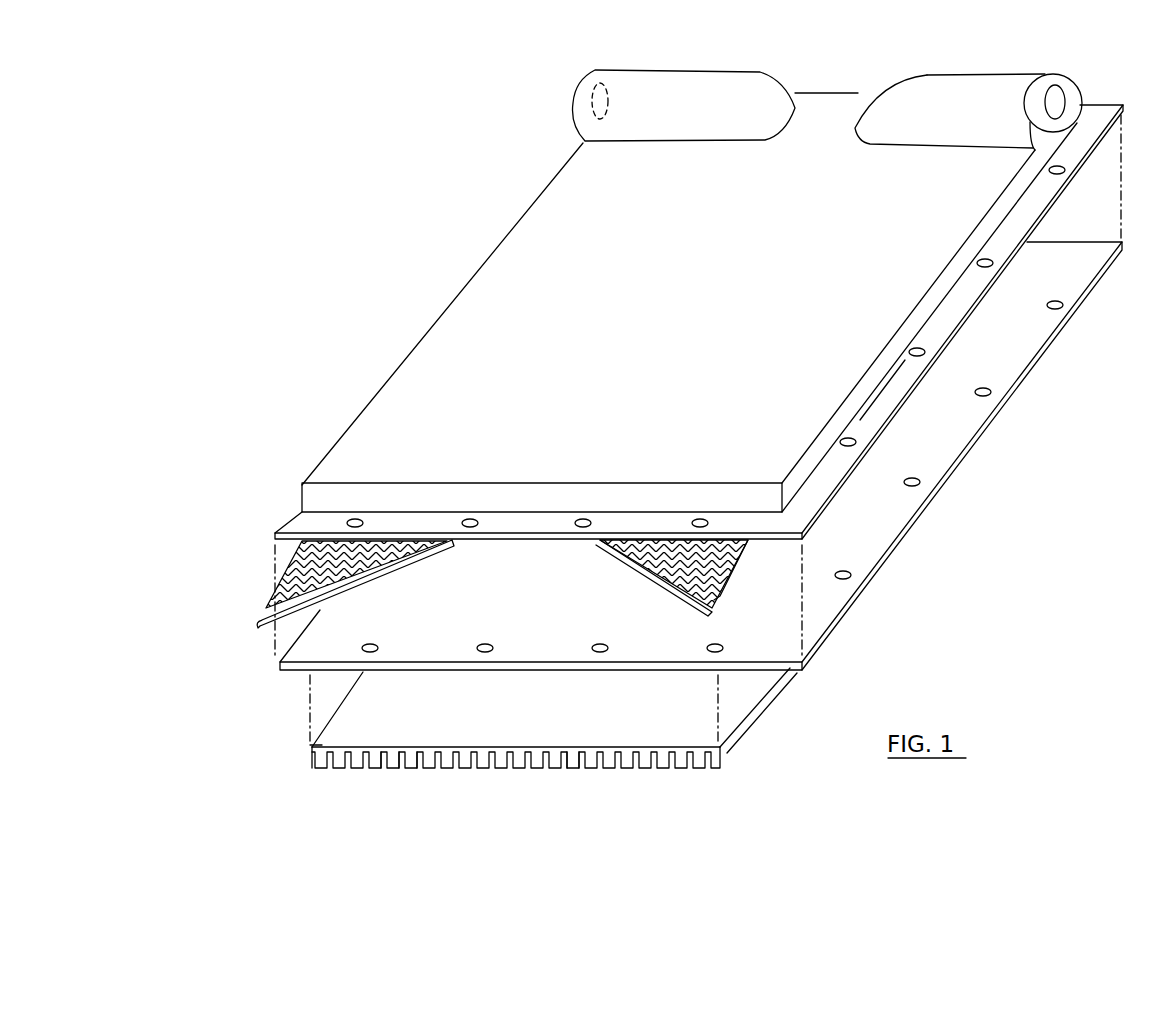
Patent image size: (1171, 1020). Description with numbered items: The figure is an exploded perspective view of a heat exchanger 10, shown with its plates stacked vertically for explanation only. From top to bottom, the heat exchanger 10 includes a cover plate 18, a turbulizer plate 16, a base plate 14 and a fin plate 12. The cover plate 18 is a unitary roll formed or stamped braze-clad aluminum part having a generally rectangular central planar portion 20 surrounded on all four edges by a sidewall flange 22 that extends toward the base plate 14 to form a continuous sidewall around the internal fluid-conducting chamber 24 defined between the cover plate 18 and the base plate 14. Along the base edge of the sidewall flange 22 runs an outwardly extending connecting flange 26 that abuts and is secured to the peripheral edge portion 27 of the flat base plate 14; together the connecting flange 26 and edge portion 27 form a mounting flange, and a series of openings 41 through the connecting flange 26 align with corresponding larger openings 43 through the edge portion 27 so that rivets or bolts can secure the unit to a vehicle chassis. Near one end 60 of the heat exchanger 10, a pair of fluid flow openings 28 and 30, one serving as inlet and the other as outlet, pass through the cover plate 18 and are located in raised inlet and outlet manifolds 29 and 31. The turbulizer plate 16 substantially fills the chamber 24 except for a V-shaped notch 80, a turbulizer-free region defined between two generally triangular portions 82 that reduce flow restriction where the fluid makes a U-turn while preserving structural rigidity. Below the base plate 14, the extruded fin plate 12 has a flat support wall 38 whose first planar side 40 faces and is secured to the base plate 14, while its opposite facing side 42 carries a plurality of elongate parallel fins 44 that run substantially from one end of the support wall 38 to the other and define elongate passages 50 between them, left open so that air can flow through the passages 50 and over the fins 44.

The heat exchanger 10 is at (348, 223).
The fin plate 12 is at (655, 725).
The base plate 14 is at (830, 622).
The turbulizer plate 16 is at (722, 565).
The cover plate 18 is at (865, 386).
The central planar portion 20 is at (957, 223).
The sidewall flange 22 is at (478, 500).
The fluid-conducting chamber 24 is at (266, 635).
The connecting flange 26 is at (533, 522).
The peripheral edge portion 27 is at (882, 532).
The fluid flow opening 28 is at (597, 100).
The inlet manifold 29 is at (678, 82).
The fluid flow opening 30 is at (1058, 100).
The outlet manifold 31 is at (935, 85).
The support wall 38 is at (320, 733).
The first planar side 40 is at (430, 717).
The openings 41 is at (357, 520).
The opposite facing side 42 is at (457, 768).
The openings 43 is at (380, 645).
The fins 44 is at (382, 768).
The passages 50 is at (573, 768).
The end 60 is at (821, 117).
The V-shaped notch 80 is at (468, 578).
The triangular portions 82 is at (372, 566).